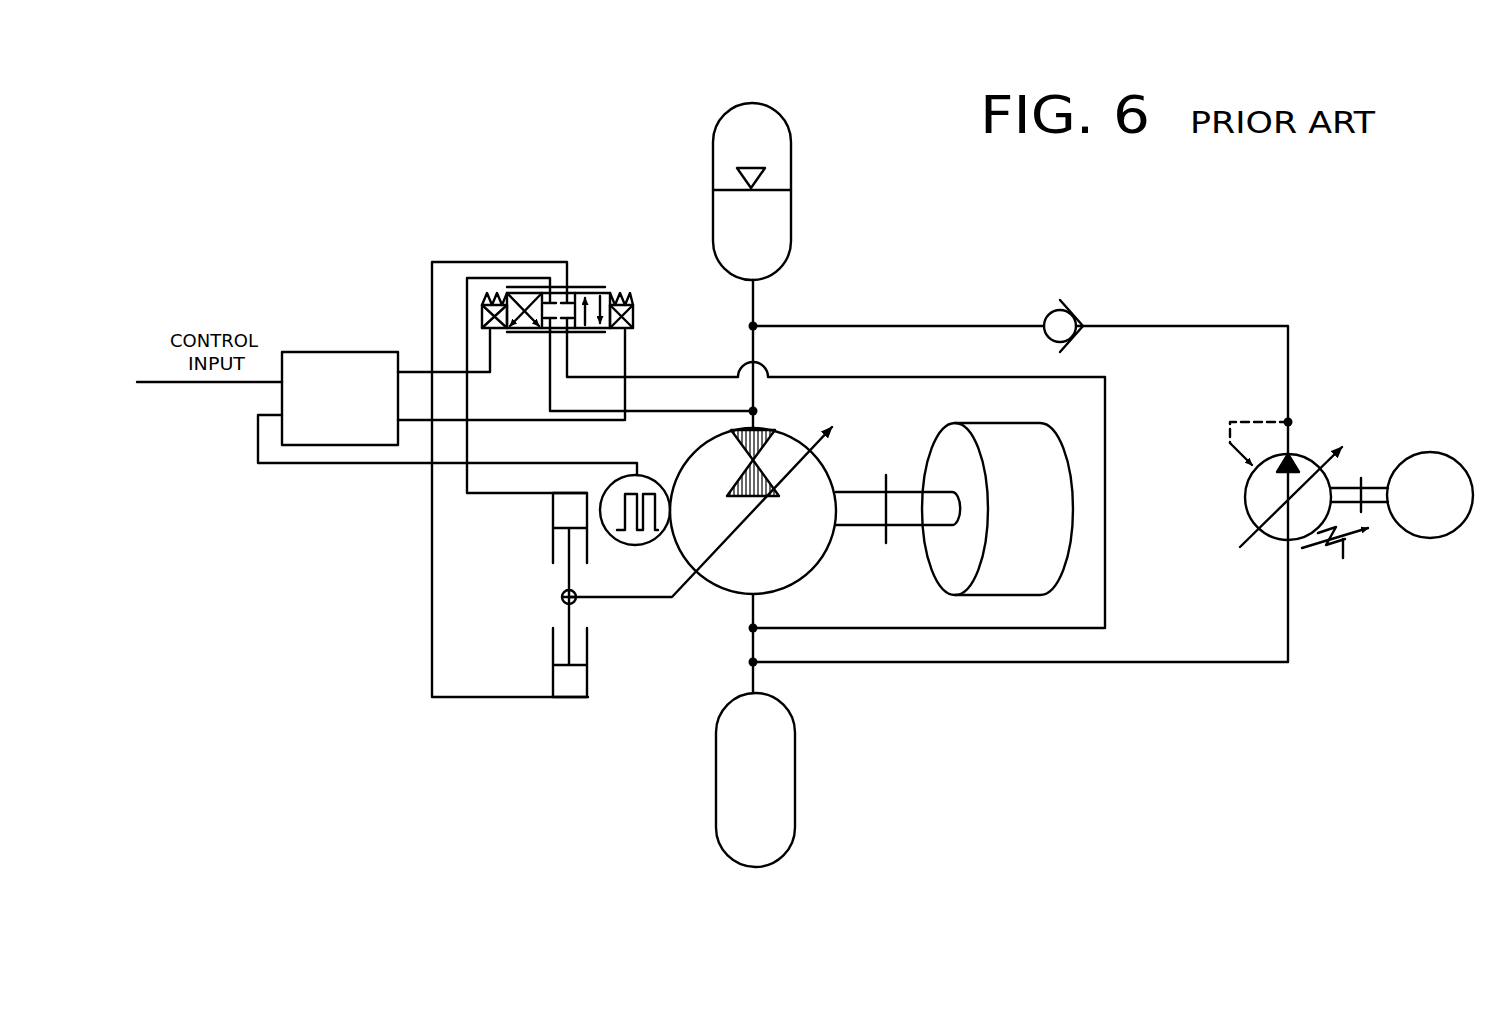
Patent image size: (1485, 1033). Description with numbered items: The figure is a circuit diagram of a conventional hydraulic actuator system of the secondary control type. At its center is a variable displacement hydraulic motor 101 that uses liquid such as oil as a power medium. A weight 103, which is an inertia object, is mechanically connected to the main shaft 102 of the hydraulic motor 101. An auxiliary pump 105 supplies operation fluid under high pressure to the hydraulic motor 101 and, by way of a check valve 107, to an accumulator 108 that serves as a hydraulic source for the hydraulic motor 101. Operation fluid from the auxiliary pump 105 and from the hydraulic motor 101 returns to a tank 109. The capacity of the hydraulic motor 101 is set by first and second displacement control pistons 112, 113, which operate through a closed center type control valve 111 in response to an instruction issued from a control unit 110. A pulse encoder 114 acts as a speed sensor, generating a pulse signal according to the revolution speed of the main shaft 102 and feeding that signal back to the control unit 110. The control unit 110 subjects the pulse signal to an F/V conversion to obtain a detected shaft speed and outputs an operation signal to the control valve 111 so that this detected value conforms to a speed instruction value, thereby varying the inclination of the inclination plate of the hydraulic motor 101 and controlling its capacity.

The variable displacement hydraulic motor 101 is at (722, 601).
The main shaft 102 is at (860, 520).
The weight 103 is at (1012, 598).
The auxiliary pump 105 is at (1240, 508).
The check valve 107 is at (1074, 308).
The accumulator 108 is at (786, 145).
The tank 109 is at (791, 770).
The control unit 110 is at (335, 352).
The closed center type control valve 111 is at (581, 284).
The first displacement control piston 112 is at (549, 535).
The second displacement control piston 113 is at (549, 661).
The pulse encoder 114 is at (638, 475).